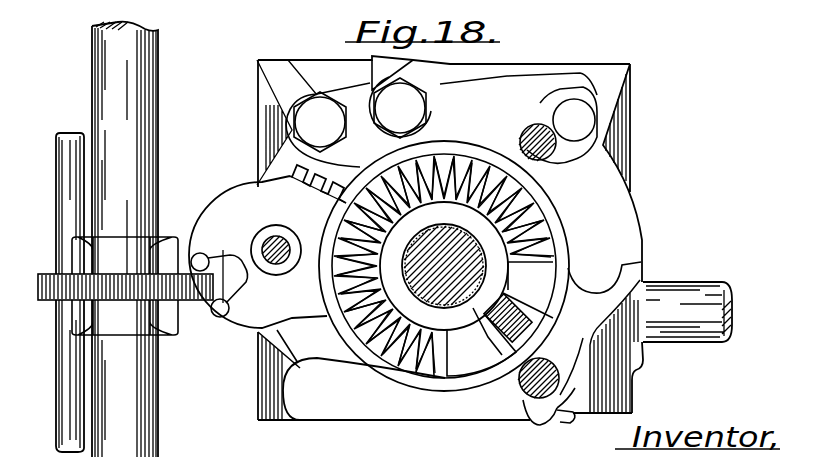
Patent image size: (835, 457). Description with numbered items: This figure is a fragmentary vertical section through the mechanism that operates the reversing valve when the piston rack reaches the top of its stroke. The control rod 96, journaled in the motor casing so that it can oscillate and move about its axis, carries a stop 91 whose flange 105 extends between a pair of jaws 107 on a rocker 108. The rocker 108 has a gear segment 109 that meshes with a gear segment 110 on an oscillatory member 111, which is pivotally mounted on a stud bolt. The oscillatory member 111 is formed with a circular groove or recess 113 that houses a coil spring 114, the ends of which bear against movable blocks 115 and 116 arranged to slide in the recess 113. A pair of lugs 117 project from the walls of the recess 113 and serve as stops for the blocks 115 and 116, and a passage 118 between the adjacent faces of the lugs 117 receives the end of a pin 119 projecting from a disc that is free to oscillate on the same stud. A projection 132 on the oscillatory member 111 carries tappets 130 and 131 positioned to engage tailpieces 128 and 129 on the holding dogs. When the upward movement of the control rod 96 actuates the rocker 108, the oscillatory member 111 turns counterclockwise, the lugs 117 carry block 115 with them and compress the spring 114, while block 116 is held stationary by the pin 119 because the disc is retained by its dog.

The stop 91 is at (66, 286).
The control rod 96 is at (140, 179).
The flange 105 is at (200, 316).
The jaws 107 is at (221, 300).
The rocker 108 is at (277, 308).
The gear segment 109 is at (285, 181).
The gear segment 110 is at (500, 112).
The oscillatory member 111 is at (518, 90).
The circular groove or recess 113 is at (543, 198).
The coil spring 114 is at (540, 253).
The movable block 115 is at (540, 283).
The movable block 116 is at (466, 352).
The lugs 117 is at (518, 302).
The passage 118 is at (520, 406).
The pin 119 is at (540, 326).
The tailpiece 128 is at (545, 410).
The tailpiece 129 is at (548, 108).
The tappet 130 is at (570, 422).
The tappet 131 is at (628, 272).
The projection 132 is at (620, 372).